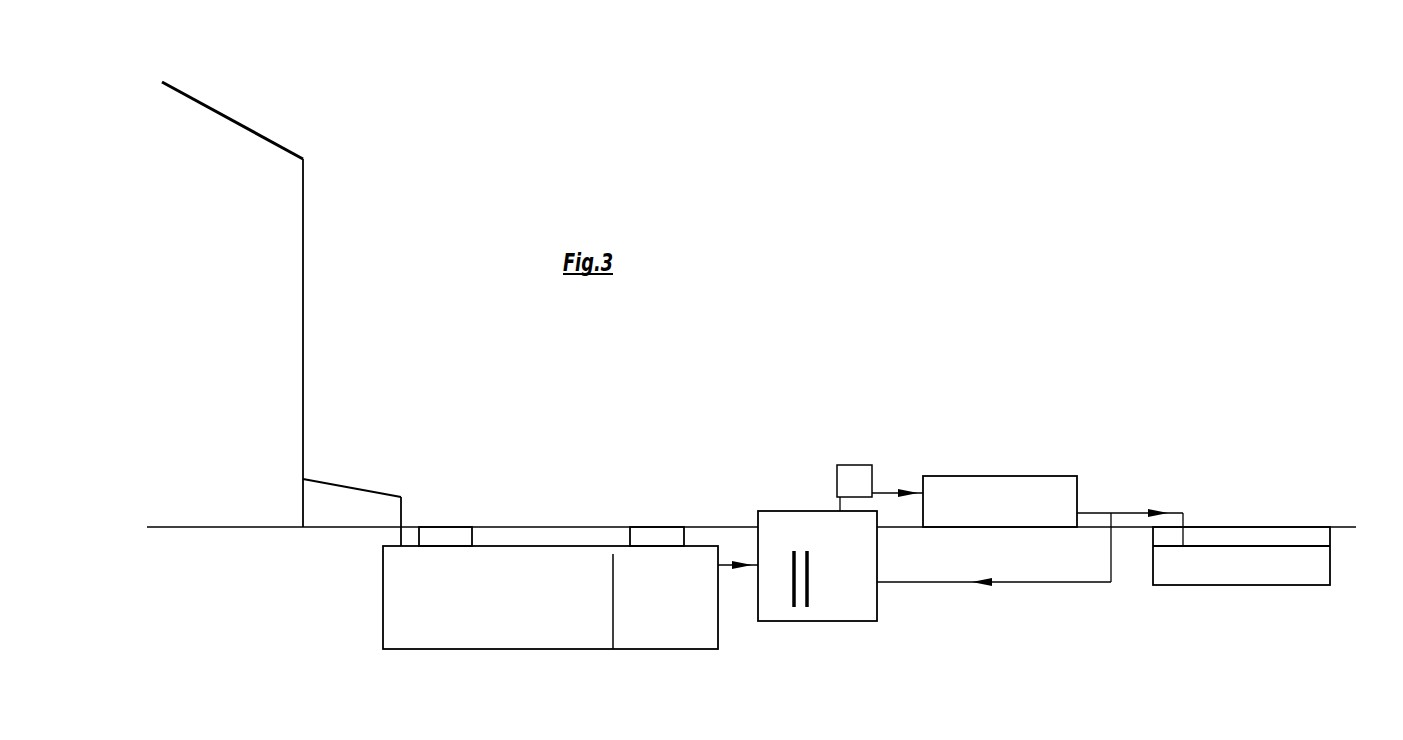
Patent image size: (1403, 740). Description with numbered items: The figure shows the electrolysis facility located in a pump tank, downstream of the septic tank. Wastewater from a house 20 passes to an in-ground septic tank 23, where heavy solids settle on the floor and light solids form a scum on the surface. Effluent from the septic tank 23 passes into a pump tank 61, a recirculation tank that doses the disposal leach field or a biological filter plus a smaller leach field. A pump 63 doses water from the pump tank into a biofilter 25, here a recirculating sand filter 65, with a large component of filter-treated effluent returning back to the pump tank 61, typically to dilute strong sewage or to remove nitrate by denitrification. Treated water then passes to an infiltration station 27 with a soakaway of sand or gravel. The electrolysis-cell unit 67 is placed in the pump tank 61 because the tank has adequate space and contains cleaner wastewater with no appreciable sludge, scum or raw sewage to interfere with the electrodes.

The house 20 is at (243, 419).
The septic tank 23 is at (532, 599).
The pump tank 61 is at (860, 598).
The pump 63 is at (848, 465).
The electrolysis-cell unit 67 is at (802, 583).
The biofilter 25 is at (1000, 463).
The recirculating sand filter 65 is at (982, 492).
The infiltration station 27 is at (1210, 573).